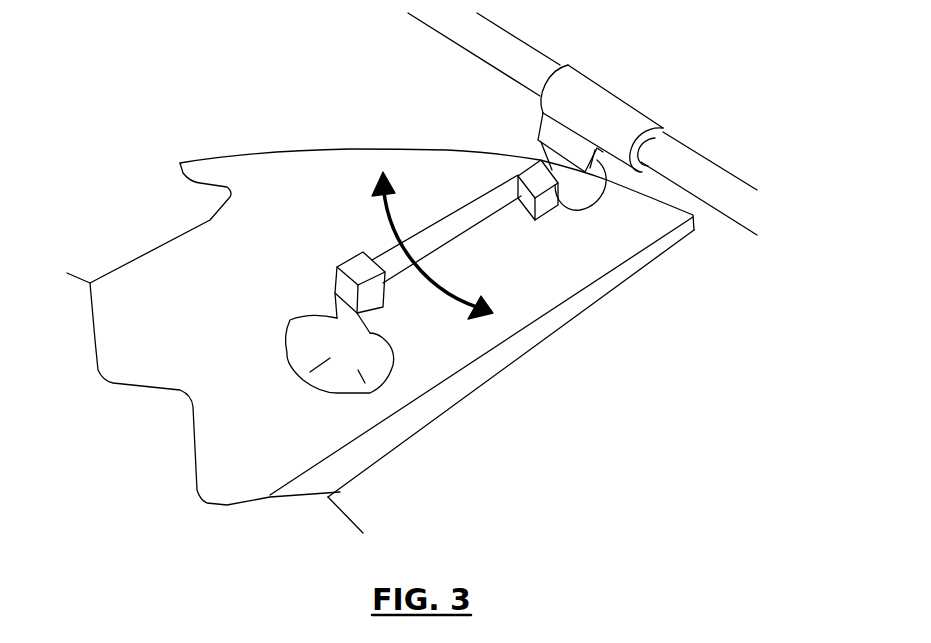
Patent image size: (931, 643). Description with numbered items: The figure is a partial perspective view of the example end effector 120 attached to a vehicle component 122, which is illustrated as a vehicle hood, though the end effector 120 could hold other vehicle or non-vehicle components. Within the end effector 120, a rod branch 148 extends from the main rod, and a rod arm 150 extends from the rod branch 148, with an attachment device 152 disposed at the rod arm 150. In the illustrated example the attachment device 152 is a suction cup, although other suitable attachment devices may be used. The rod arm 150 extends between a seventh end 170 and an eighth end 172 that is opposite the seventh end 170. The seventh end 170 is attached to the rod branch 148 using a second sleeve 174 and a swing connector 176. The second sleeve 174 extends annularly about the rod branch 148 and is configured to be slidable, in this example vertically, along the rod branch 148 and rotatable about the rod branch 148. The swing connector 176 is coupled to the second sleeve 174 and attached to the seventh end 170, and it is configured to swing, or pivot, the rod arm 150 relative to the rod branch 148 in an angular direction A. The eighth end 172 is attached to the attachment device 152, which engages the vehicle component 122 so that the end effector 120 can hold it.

The end effector 120 is at (533, 252).
The vehicle component 122 is at (208, 262).
The rod branch 148 is at (500, 50).
The rod arm 150 is at (455, 227).
The attachment device 152 is at (340, 380).
The seventh end 170 is at (545, 207).
The eighth end 172 is at (360, 270).
The second sleeve 174 is at (598, 102).
The swing connector 176 is at (580, 192).
The angular direction A is at (437, 290).